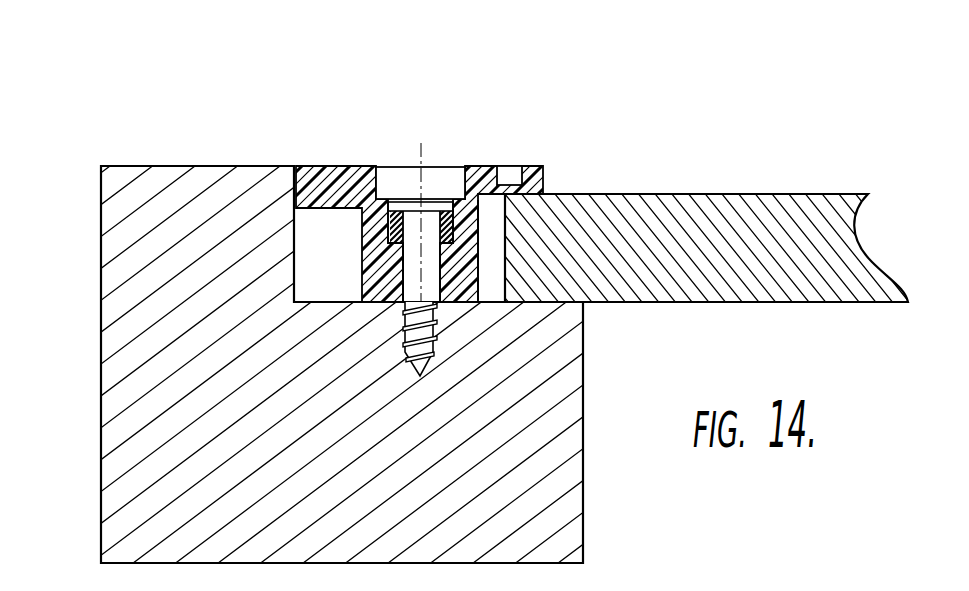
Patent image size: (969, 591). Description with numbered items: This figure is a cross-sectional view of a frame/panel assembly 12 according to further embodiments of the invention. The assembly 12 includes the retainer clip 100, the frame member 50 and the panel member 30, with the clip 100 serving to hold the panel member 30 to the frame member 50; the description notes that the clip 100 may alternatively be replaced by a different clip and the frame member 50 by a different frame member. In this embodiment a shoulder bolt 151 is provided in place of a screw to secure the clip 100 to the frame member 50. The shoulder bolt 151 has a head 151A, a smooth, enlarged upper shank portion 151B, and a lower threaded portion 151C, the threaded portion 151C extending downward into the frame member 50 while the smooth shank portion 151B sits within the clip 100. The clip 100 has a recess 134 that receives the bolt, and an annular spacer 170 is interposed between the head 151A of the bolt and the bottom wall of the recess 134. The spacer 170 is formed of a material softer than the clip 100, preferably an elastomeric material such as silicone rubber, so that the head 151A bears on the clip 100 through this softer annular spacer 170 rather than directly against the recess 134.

The frame/panel assembly 12 is at (646, 116).
The panel member 30 is at (752, 193).
The frame member 50 is at (162, 410).
The retainer clip 100 is at (392, 150).
The recess 134 is at (362, 246).
The shoulder bolt 151 is at (373, 304).
The head 151A is at (433, 208).
The upper shank portion 151B is at (415, 274).
The lower threaded portion 151C is at (432, 328).
The annular spacer 170 is at (455, 229).